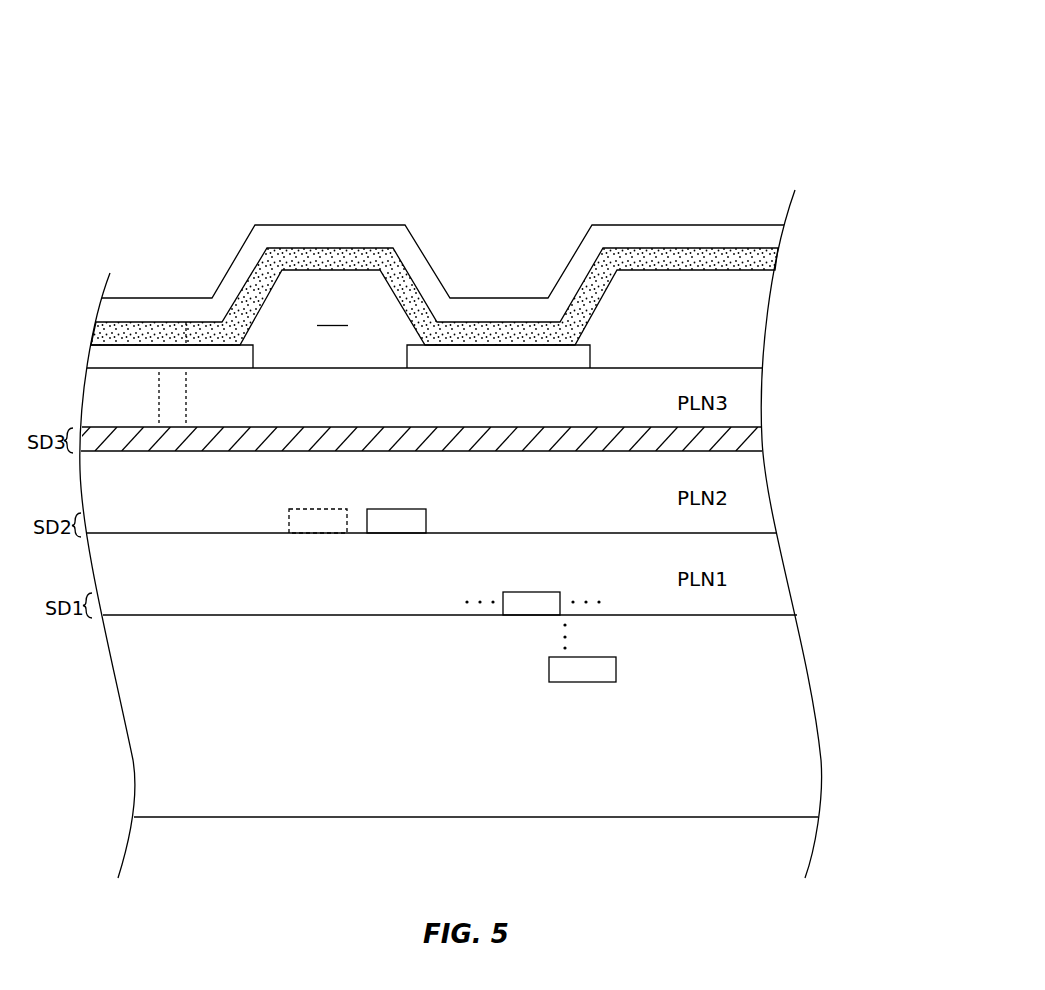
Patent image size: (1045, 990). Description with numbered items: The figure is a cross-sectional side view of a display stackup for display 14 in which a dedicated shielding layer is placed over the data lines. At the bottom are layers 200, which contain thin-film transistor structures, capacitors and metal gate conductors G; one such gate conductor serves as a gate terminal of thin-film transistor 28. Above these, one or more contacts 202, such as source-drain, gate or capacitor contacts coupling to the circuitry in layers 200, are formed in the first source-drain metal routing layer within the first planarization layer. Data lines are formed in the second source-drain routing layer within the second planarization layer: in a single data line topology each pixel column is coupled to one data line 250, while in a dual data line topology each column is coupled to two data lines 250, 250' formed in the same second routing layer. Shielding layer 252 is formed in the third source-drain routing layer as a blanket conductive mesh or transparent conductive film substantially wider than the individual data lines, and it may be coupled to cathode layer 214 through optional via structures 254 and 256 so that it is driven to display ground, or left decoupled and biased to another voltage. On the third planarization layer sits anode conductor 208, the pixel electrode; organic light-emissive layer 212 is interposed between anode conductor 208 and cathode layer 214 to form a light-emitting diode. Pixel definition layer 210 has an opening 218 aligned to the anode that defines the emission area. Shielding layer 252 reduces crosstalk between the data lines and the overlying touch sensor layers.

The display 14 is at (690, 123).
The layers 200 is at (127, 723).
The contacts 202 is at (545, 590).
The anode conductor 208 is at (582, 353).
The pixel definition layer 210 is at (752, 323).
The organic light-emissive layer 212 is at (772, 262).
The cathode layer 214 is at (770, 235).
The opening 218 is at (590, 213).
The data line 250 is at (431, 513).
The data line 250' is at (282, 511).
The shielding layer 252 is at (753, 438).
The via structure 254 is at (175, 400).
The via structure 256 is at (167, 332).
The thin-film transistor 28 is at (625, 657).